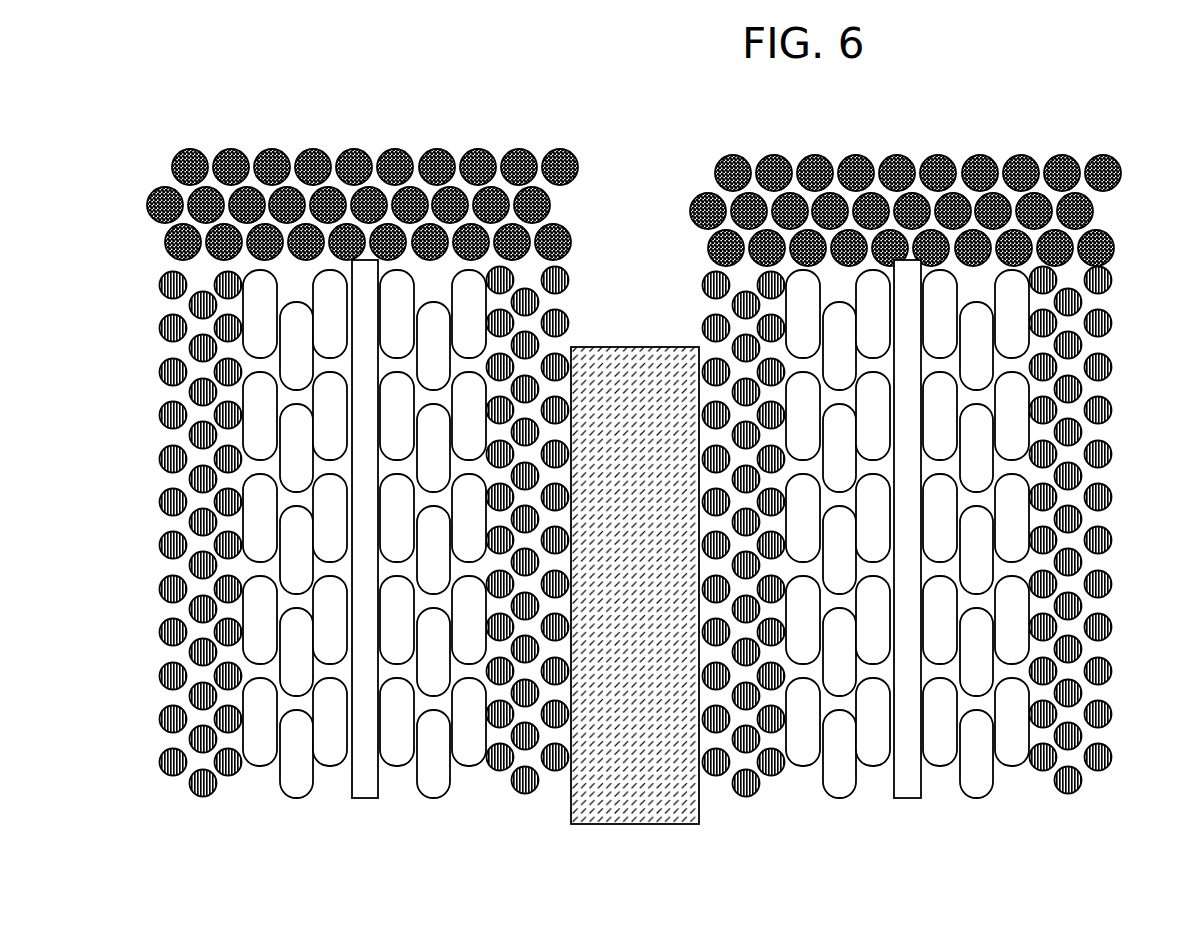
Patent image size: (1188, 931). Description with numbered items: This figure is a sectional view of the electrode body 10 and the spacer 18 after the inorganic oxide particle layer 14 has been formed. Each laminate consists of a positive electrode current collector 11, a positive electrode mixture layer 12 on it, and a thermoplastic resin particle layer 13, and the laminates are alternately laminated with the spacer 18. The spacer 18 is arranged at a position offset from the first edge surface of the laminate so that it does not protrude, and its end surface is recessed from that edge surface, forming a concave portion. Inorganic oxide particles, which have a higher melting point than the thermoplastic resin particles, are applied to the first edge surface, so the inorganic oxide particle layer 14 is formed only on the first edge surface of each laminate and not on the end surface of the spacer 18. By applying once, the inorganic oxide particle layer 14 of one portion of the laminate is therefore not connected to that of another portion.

The electrode body 10 is at (652, 82).
The positive electrode current collector 11 is at (353, 799).
The positive electrode mixture layer 12 is at (430, 796).
The thermoplastic resin particle layer 13 is at (512, 794).
The inorganic oxide particle layer 14 is at (578, 160).
The spacer 18 is at (628, 347).